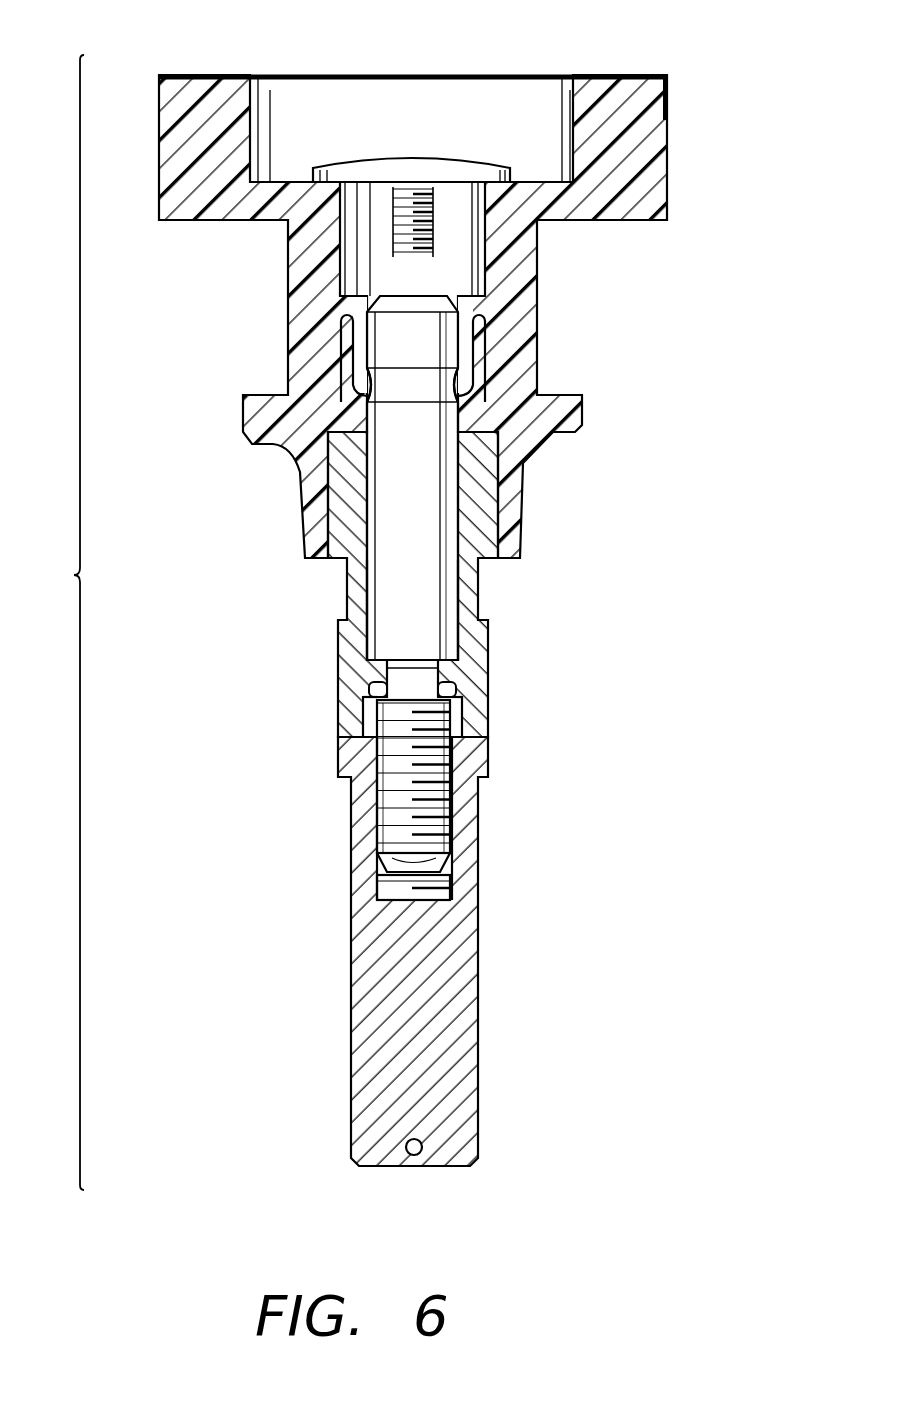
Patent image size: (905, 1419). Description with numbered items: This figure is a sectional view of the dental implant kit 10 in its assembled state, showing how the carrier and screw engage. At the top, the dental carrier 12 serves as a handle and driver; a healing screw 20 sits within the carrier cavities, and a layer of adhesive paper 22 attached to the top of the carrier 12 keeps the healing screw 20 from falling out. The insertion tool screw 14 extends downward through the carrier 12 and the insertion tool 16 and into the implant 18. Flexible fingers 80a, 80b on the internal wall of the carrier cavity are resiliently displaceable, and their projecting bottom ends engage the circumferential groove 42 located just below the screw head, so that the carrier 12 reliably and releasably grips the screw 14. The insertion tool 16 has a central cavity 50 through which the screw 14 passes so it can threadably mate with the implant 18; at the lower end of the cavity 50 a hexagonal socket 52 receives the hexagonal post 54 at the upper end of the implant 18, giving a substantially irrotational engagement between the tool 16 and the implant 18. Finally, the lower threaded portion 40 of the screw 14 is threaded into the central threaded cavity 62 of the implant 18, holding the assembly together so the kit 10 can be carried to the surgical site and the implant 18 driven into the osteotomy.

The dental implant kit 10 is at (55, 622).
The dental carrier 12 is at (253, 277).
The insertion tool screw 14 is at (430, 490).
The insertion tool 16 is at (300, 578).
The implant 18 is at (325, 968).
The healing screw 20 is at (428, 158).
The layer of adhesive paper 22 is at (608, 75).
The lower threaded portion 40 is at (402, 825).
The groove 42 is at (438, 387).
The central cavity 50 is at (470, 590).
The hexagonal socket 52 is at (458, 695).
The hexagonal post 54 is at (362, 732).
The threaded cavity 62 is at (433, 887).
The finger 80a is at (353, 357).
The finger 80b is at (467, 352).